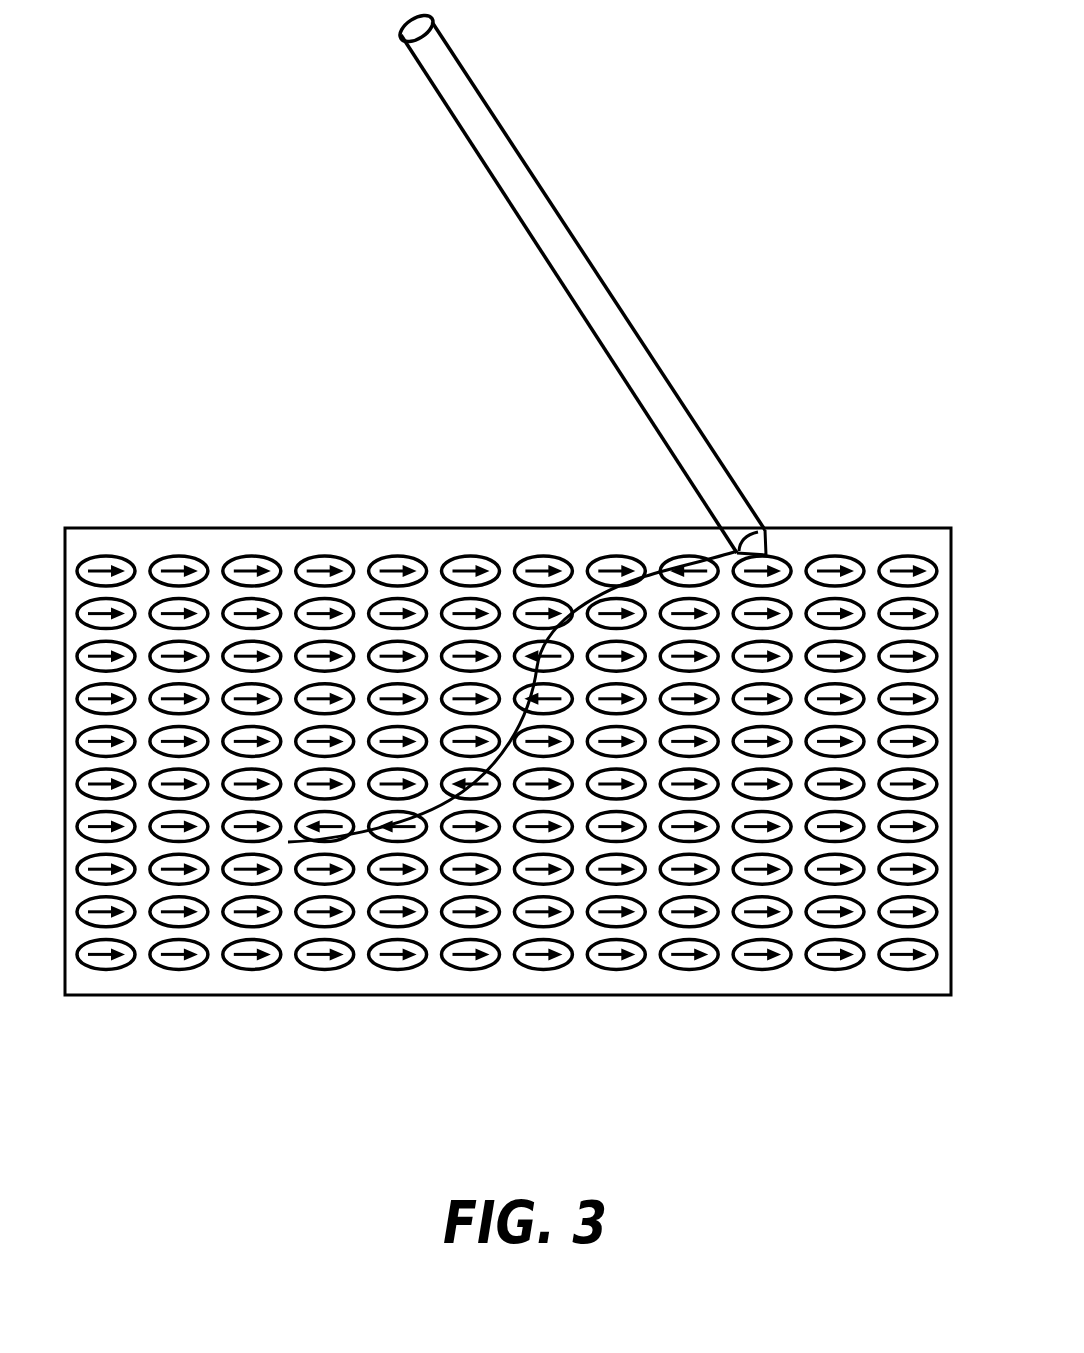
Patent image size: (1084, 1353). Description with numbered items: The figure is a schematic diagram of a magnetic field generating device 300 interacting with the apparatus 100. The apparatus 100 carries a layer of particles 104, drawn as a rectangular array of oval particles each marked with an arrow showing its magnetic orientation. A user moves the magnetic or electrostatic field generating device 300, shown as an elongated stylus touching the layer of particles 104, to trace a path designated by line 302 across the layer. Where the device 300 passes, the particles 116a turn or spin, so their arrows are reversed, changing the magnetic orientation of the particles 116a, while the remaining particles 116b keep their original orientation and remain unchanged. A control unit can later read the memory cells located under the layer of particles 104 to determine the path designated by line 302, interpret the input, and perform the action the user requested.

The apparatus 100 is at (508, 728).
The layer of particles 104 is at (372, 528).
The particles (turned) 116a is at (686, 556).
The remaining particles (unchanged) 116b is at (248, 967).
The magnetic field generating device 300 is at (658, 368).
The line designating the traced path 302 is at (585, 608).